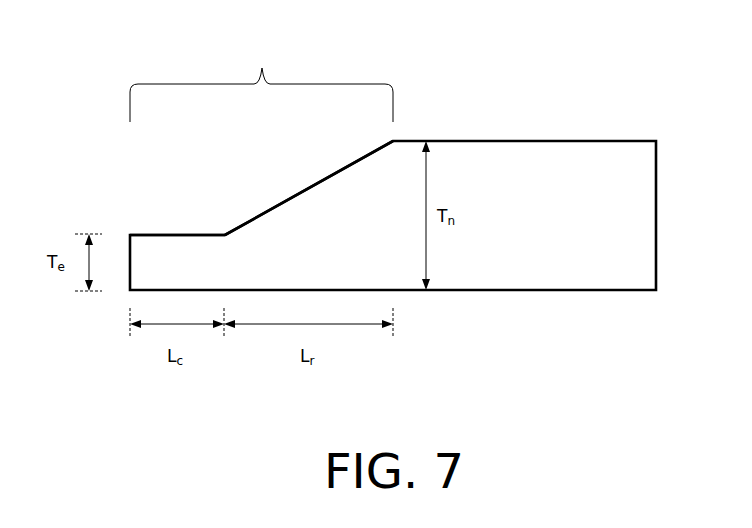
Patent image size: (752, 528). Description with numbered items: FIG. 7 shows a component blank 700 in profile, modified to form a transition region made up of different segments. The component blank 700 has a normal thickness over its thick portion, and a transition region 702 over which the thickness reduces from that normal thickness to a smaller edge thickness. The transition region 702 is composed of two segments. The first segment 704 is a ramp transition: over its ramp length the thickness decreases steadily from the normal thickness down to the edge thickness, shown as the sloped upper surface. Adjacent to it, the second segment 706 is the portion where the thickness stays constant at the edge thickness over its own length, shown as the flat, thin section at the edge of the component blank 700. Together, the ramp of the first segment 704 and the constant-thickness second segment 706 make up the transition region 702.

The component blank 700 is at (636, 140).
The transition region 702 is at (261, 79).
The first segment 704 is at (311, 188).
The second segment 706 is at (172, 234).